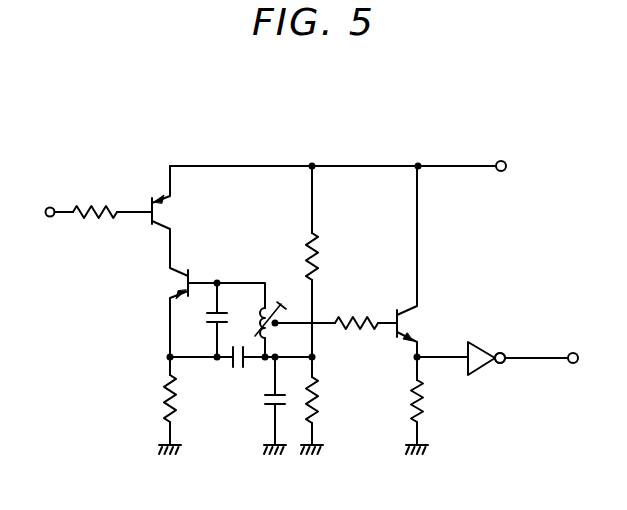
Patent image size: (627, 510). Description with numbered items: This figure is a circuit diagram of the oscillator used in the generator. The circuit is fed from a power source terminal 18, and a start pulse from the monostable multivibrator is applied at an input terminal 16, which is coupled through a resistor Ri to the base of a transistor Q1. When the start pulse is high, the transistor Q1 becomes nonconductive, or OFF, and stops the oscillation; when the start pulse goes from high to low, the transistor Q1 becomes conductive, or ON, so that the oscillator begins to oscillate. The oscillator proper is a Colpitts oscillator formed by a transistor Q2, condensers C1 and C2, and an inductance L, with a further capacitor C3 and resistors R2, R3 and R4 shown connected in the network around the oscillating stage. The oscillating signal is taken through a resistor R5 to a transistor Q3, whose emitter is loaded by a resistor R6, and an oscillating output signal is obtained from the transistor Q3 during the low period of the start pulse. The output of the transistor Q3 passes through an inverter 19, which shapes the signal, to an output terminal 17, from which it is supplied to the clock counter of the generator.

The input terminal 16 is at (50, 206).
The output terminal 17 is at (574, 352).
The power source terminal 18 is at (505, 160).
The inverter 19 is at (493, 347).
The input resistor Ri is at (95, 206).
The transistor Q1 is at (172, 210).
The transistor Q2 is at (163, 287).
The transistor Q3 is at (421, 319).
The condenser C1 is at (205, 319).
The condenser C2 is at (240, 362).
The capacitor C3 is at (262, 401).
The inductance L is at (263, 320).
The resistor R2 is at (163, 404).
The resistor R3 is at (320, 250).
The resistor R4 is at (320, 401).
The resistor R5 is at (355, 318).
The resistor R6 is at (425, 401).